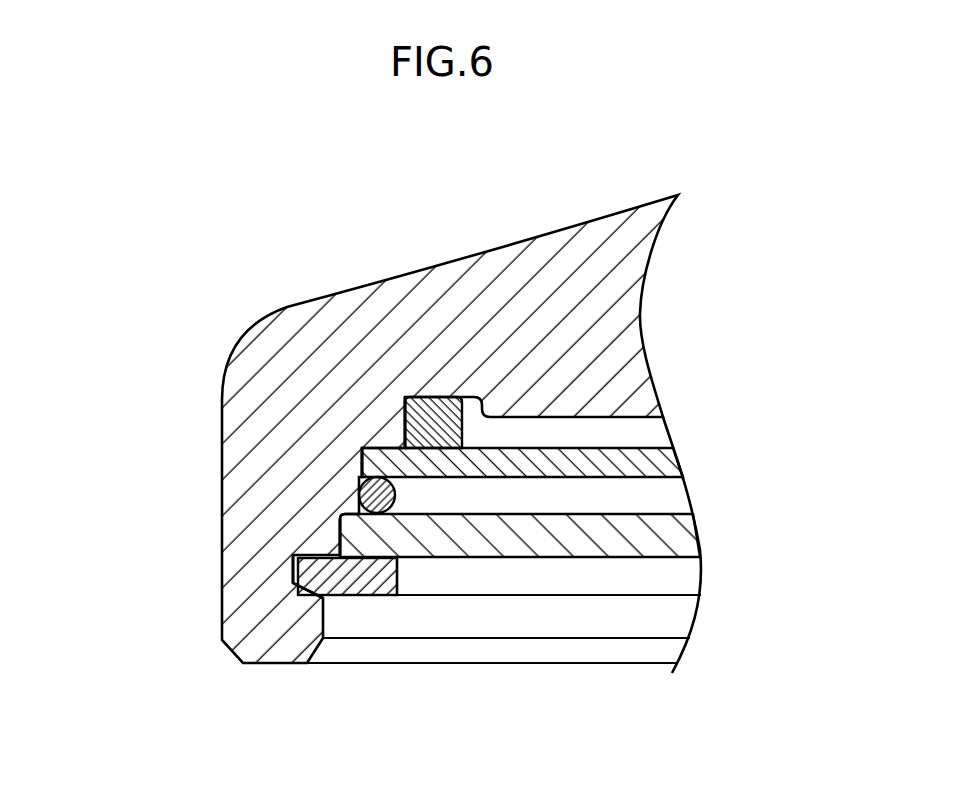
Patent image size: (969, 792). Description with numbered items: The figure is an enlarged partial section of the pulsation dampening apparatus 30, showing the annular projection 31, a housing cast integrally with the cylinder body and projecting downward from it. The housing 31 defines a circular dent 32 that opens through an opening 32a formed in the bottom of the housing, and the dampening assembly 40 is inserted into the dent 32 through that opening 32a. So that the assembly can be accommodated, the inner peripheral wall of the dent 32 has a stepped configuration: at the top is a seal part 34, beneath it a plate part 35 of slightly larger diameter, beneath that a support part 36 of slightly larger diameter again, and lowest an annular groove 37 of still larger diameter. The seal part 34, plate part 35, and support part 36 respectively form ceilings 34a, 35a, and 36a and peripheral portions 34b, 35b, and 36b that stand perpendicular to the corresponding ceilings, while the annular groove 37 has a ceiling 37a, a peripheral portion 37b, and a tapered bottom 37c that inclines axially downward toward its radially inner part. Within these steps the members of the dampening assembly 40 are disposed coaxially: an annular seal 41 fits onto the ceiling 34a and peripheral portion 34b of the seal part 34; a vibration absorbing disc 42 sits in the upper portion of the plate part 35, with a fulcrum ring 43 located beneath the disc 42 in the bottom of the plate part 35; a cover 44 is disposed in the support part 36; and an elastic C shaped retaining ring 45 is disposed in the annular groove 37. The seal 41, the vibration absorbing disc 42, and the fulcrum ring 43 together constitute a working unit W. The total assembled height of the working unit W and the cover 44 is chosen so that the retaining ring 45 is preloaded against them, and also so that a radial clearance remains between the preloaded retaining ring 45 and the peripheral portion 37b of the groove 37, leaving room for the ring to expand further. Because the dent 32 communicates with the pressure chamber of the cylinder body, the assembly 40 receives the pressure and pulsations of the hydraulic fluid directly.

The pulsation dampening apparatus 30 is at (238, 220).
The annular projection 31 is at (448, 308).
The circular dent 32 is at (492, 704).
The opening 32a is at (504, 670).
The seal part 34 is at (97, 307).
The ceiling 34a is at (405, 405).
The peripheral portion 34b is at (405, 435).
The plate part 35 is at (97, 397).
The ceiling 35a is at (362, 458).
The peripheral portion 35b is at (362, 477).
The support part 36 is at (97, 488).
The ceiling 36a is at (338, 522).
The peripheral portion 36b is at (338, 537).
The annular groove 37 is at (97, 577).
The ceiling 37a is at (293, 560).
The peripheral portion 37b is at (293, 583).
The tapered bottom 37c is at (322, 598).
The dampening assembly 40 is at (837, 422).
The working unit W is at (792, 373).
The annular seal 41 is at (462, 412).
The vibration absorbing disc 42 is at (588, 455).
The fulcrum ring 43 is at (395, 490).
The cover 44 is at (683, 538).
The C shaped retaining ring 45 is at (395, 583).